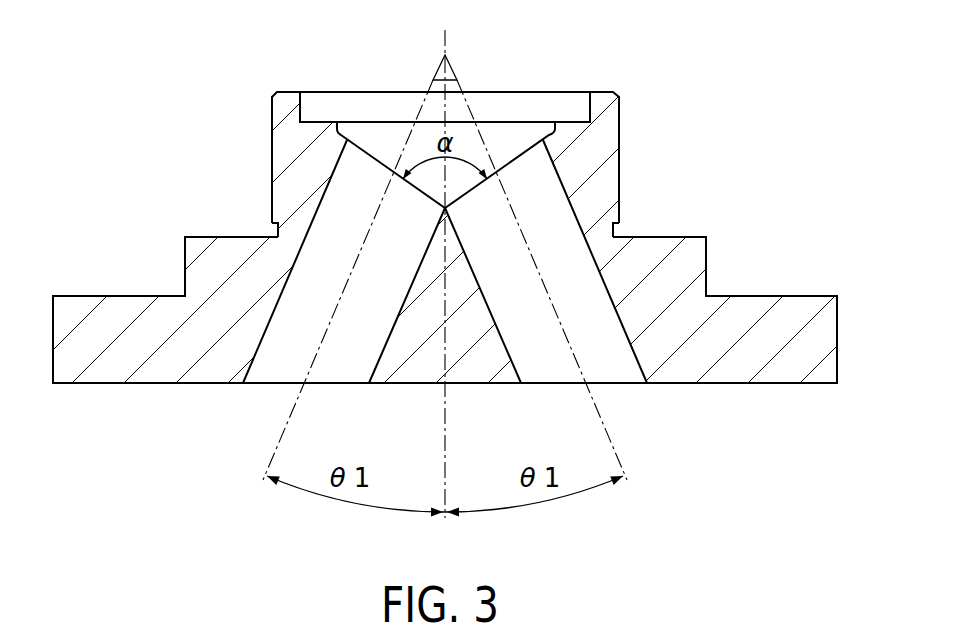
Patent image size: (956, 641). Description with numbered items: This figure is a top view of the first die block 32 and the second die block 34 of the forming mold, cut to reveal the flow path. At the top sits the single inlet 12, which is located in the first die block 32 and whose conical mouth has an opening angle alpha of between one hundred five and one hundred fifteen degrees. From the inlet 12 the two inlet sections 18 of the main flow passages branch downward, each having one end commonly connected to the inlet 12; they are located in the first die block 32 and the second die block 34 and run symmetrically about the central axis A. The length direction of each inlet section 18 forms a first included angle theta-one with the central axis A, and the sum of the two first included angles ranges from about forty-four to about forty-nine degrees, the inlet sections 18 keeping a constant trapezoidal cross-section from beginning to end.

The inlet 12 is at (548, 135).
The inlet section 18 is at (283, 375).
The first die block 32 is at (605, 176).
The second die block 34 is at (745, 307).
The central axis A is at (445, 80).